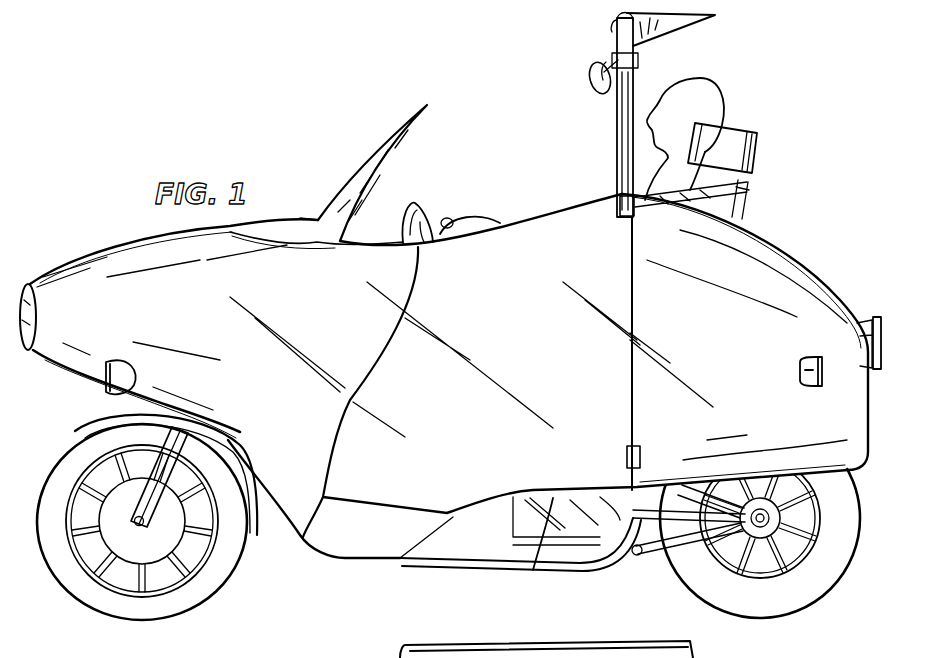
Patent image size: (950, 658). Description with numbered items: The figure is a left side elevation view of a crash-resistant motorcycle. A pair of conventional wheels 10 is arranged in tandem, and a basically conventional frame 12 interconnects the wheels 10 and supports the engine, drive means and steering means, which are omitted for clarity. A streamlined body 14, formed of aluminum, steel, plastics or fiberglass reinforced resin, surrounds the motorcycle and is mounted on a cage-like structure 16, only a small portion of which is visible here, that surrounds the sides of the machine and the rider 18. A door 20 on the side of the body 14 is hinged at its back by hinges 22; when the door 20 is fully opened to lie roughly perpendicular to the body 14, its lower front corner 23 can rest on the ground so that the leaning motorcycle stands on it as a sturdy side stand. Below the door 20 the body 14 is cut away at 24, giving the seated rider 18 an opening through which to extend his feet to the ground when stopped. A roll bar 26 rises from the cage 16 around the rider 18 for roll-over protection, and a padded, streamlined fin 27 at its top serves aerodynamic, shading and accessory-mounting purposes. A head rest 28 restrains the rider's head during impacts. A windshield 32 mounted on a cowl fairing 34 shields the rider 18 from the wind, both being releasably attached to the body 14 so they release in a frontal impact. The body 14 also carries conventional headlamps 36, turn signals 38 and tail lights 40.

The wheels 10 is at (170, 612).
The frame 12 is at (180, 466).
The streamlined body 14 is at (777, 253).
The cage-like structure 16 is at (465, 565).
The rider 18 is at (698, 88).
The door 20 is at (500, 223).
The hinges 22 is at (637, 212).
The lower front corner 23 is at (320, 543).
The cut-away 24 is at (548, 560).
The roll bar 26 is at (618, 121).
The fin 27 is at (684, 26).
The head rest 28 is at (742, 130).
The windshield 32 is at (405, 122).
The cowl fairing 34 is at (290, 222).
The headlamps 36 is at (35, 313).
The turn signals 38 is at (107, 380).
The tail lights 40 is at (870, 322).